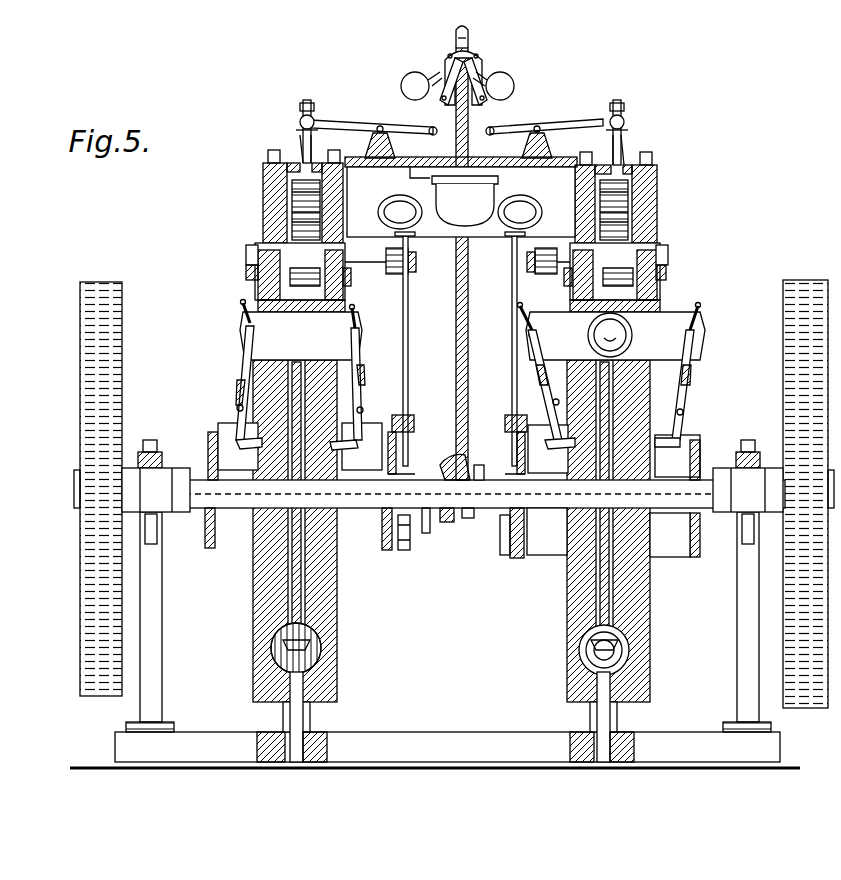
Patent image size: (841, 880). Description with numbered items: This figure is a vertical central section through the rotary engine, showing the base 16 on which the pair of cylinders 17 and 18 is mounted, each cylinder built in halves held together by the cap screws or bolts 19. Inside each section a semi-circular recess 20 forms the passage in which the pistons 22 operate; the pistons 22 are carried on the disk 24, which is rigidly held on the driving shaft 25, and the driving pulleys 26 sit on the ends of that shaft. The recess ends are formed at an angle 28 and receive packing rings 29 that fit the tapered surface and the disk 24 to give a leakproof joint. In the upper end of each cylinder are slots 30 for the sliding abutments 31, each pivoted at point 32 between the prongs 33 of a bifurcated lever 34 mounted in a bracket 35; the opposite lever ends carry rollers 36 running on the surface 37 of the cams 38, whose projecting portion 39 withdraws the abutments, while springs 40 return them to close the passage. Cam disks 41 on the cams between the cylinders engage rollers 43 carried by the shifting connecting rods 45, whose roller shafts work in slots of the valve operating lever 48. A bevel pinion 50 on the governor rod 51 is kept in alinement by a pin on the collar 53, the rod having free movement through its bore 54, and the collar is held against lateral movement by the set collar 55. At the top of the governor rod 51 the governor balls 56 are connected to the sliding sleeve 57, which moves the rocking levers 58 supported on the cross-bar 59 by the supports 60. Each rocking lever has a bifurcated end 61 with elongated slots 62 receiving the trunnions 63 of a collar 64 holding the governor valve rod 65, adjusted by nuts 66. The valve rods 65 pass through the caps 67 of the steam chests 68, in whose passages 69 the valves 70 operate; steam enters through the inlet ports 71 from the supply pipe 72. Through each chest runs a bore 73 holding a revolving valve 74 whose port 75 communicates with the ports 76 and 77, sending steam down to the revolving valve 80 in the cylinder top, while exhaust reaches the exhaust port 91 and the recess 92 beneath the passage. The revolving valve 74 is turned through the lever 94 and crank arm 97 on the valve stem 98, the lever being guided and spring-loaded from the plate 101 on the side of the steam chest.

The base 16 is at (435, 750).
The cylinder 17 is at (338, 670).
The cylinder 18 is at (648, 680).
The cap screws or bolts 19 is at (424, 527).
The semi-circular recess 20 is at (258, 650).
The piston 22 is at (258, 512).
The disk 24 is at (270, 585).
The driving shaft 25 is at (552, 510).
The driving pulley 26 is at (123, 348).
The angled end of recess 28 is at (280, 628).
The packing ring 29 is at (283, 635).
The slot 30 is at (255, 300).
The sliding abutment 31 is at (245, 312).
The pivot point 32 is at (247, 332).
The prongs 33 is at (245, 355).
The bifurcated lever 34 is at (243, 378).
The bracket 35 is at (236, 408).
The roller 36 is at (238, 440).
The cam surface 37 is at (215, 540).
The cam 38 is at (705, 540).
The projecting portion 39 is at (690, 550).
The spring 40 is at (240, 306).
The cam disk 41 is at (405, 550).
The roller 43 is at (410, 236).
The shifting connecting rod 45 is at (408, 418).
The valve operating lever 48 is at (408, 380).
The bevel pinion 50 is at (462, 458).
The governor rod 51 is at (492, 186).
The collar 53 is at (447, 522).
The bore 54 is at (472, 466).
The set collar 55 is at (468, 518).
The governor ball 56 is at (405, 82).
The sliding sleeve 57 is at (470, 103).
The rocking lever 58 is at (405, 124).
The cross-bar 59 is at (421, 179).
The support 60 is at (392, 145).
The bifurcated end 61 is at (312, 118).
The elongated slot 62 is at (300, 124).
The trunnion 63 is at (313, 140).
The collar 64 is at (298, 132).
The governor valve rod 65 is at (306, 103).
The nut 66 is at (300, 112).
The cap 67 is at (263, 170).
The steam chest 68 is at (345, 187).
The passage 69 is at (345, 212).
The valve 70 is at (345, 200).
The inlet port 71 is at (268, 200).
The steam supply pipe 72 is at (520, 210).
The bore 73 is at (263, 236).
The revolving valve 74 is at (258, 265).
The port 75 is at (668, 268).
The port 76 is at (268, 222).
The port 77 is at (255, 280).
The revolving valve 80 is at (351, 276).
The exhaust port 91 is at (310, 714).
The recess 92 is at (305, 690).
The lever 94 is at (408, 270).
The crank arm 97 is at (345, 300).
The valve stem 98 is at (386, 250).
The plate 101 is at (473, 216).